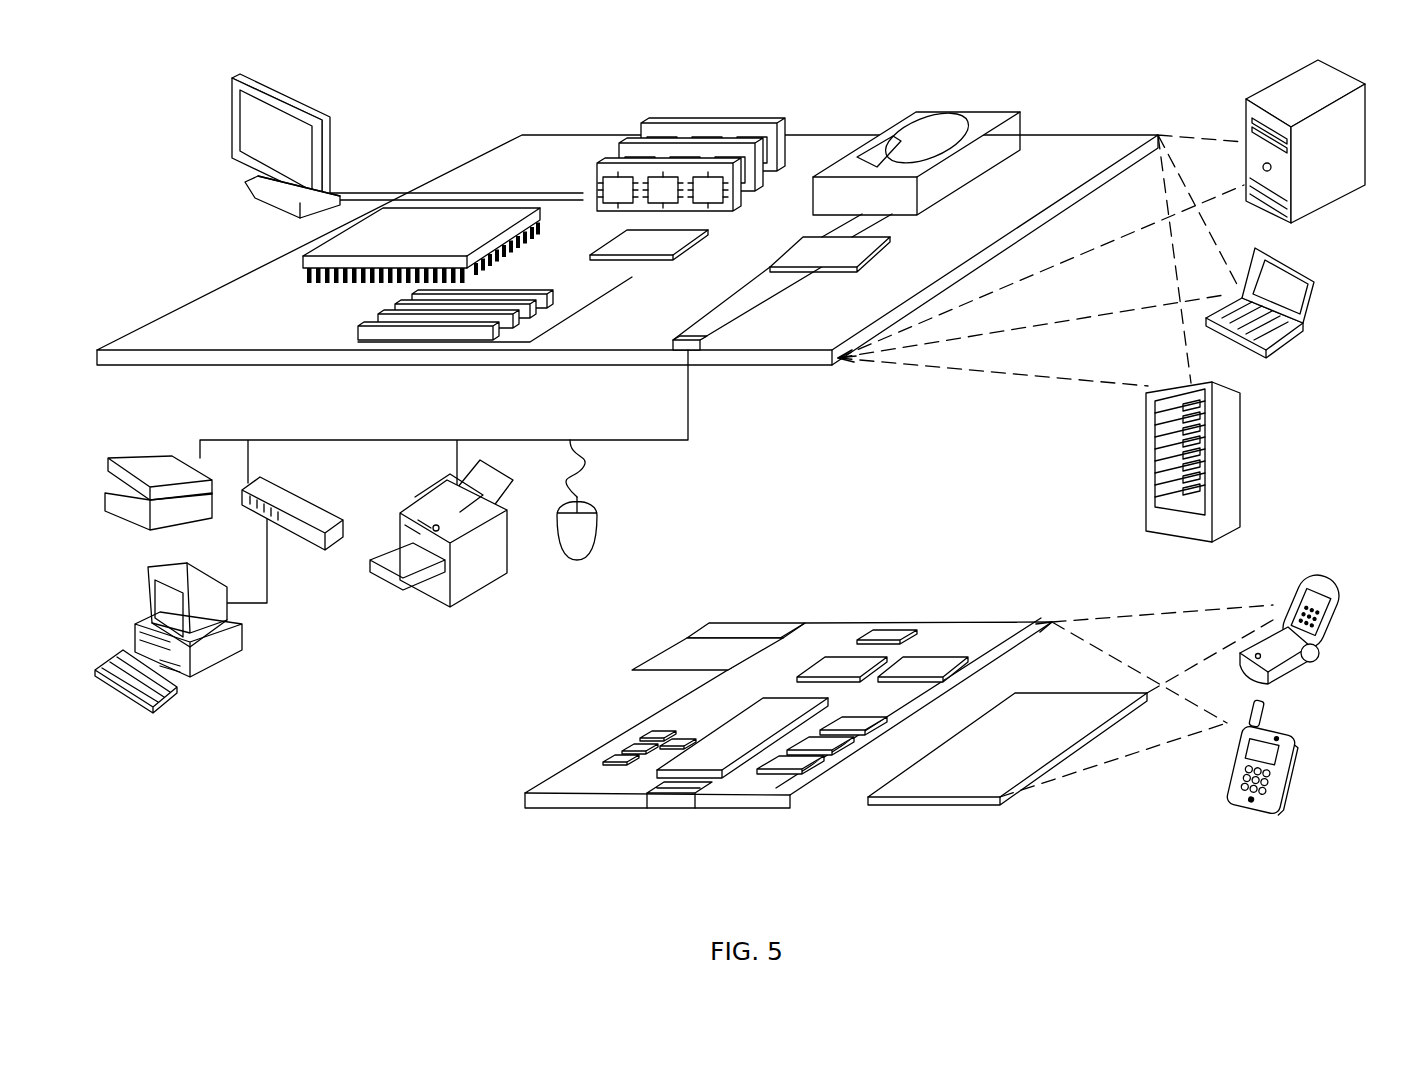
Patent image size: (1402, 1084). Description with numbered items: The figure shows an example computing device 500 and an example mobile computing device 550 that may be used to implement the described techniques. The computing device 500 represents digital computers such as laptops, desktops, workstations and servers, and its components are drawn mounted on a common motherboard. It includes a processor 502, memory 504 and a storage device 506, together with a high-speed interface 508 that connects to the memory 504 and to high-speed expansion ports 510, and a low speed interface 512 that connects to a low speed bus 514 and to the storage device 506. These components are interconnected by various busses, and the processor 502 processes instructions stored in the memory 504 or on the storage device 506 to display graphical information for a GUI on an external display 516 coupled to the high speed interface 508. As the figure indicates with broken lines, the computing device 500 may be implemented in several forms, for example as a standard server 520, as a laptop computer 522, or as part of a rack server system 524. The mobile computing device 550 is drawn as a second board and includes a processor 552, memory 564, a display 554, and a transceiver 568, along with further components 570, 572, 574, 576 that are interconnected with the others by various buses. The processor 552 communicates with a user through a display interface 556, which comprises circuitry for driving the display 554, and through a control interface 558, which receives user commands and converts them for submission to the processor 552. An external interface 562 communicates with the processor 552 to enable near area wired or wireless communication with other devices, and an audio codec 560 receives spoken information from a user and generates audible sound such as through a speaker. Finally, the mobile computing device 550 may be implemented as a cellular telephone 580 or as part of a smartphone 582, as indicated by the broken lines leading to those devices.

The computing device 500 is at (441, 103).
The processor 502 is at (310, 262).
The memory 504 is at (658, 131).
The storage device 506 is at (913, 118).
The high-speed interface 508 is at (625, 246).
The high-speed expansion ports 510 is at (383, 322).
The low speed interface 512 is at (810, 244).
The low speed bus 514 is at (705, 352).
The display 516 is at (236, 80).
The standard server 520 is at (1244, 118).
The laptop computer 522 is at (1314, 272).
The rack server system 524 is at (1146, 488).
The mobile computing device 550 is at (488, 813).
The processor 552 is at (713, 760).
The display 554 is at (963, 780).
The display interface 556 is at (783, 769).
The control interface 558 is at (822, 745).
The audio codec 560 is at (850, 725).
The external interface 562 is at (677, 797).
The memory 564 is at (620, 754).
The transceiver 568 is at (923, 660).
The component 570 is at (891, 625).
The component 572 is at (760, 640).
The component 574 is at (686, 640).
The component 576 is at (840, 667).
The cellular telephone 580 is at (1293, 582).
The smartphone 582 is at (1235, 765).